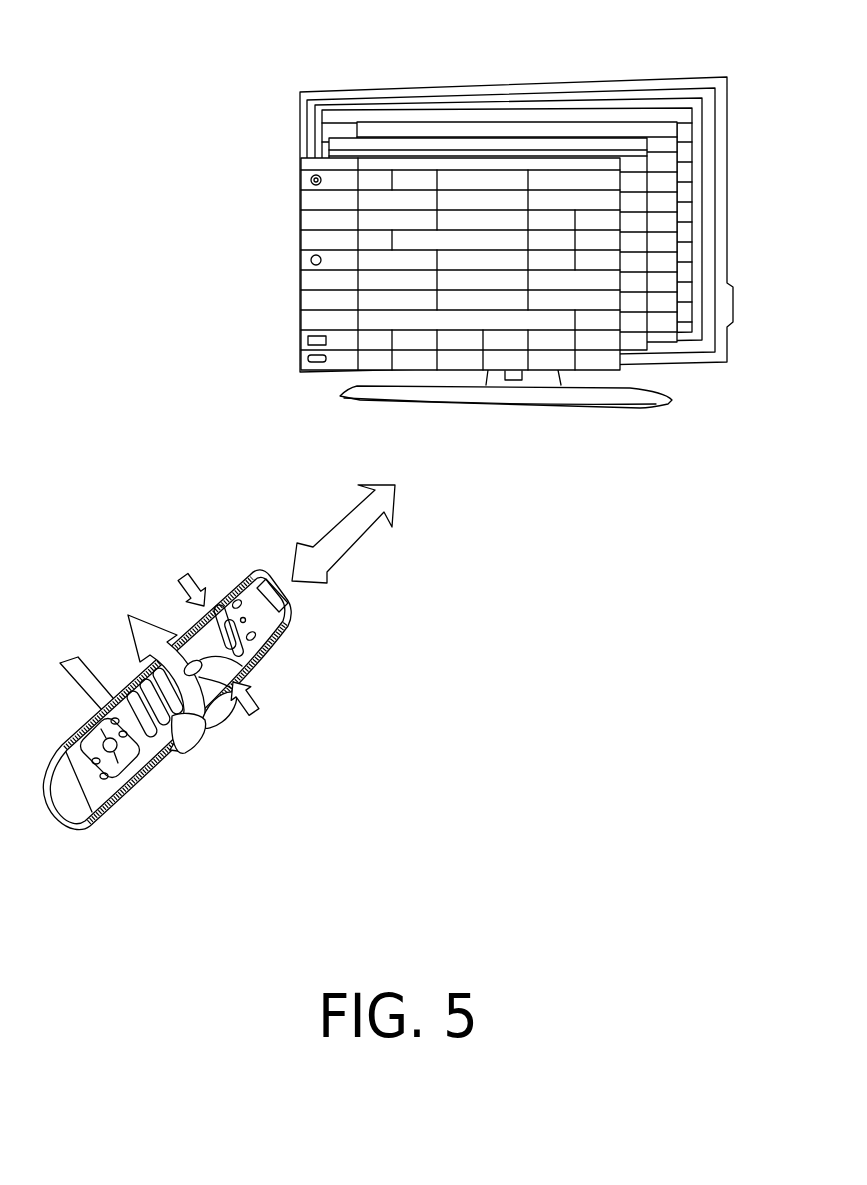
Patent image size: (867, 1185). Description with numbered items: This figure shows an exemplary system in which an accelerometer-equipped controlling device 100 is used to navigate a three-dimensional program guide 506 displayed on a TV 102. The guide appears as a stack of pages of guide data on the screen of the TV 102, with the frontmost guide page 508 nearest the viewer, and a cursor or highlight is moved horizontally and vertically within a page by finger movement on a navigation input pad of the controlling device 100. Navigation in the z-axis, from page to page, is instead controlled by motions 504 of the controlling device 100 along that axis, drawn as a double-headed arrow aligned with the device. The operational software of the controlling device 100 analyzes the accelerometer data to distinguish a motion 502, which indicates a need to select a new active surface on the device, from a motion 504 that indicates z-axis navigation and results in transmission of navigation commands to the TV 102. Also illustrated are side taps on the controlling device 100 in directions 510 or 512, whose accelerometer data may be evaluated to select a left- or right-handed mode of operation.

The controlling device 100 is at (44, 808).
The TV 102 is at (459, 248).
The motion 502 is at (207, 748).
The motions 504 is at (338, 546).
The 3-D program guide 506 is at (455, 294).
The front program guide page 508 is at (600, 335).
The tap direction 510 is at (250, 715).
The tap direction 512 is at (183, 575).